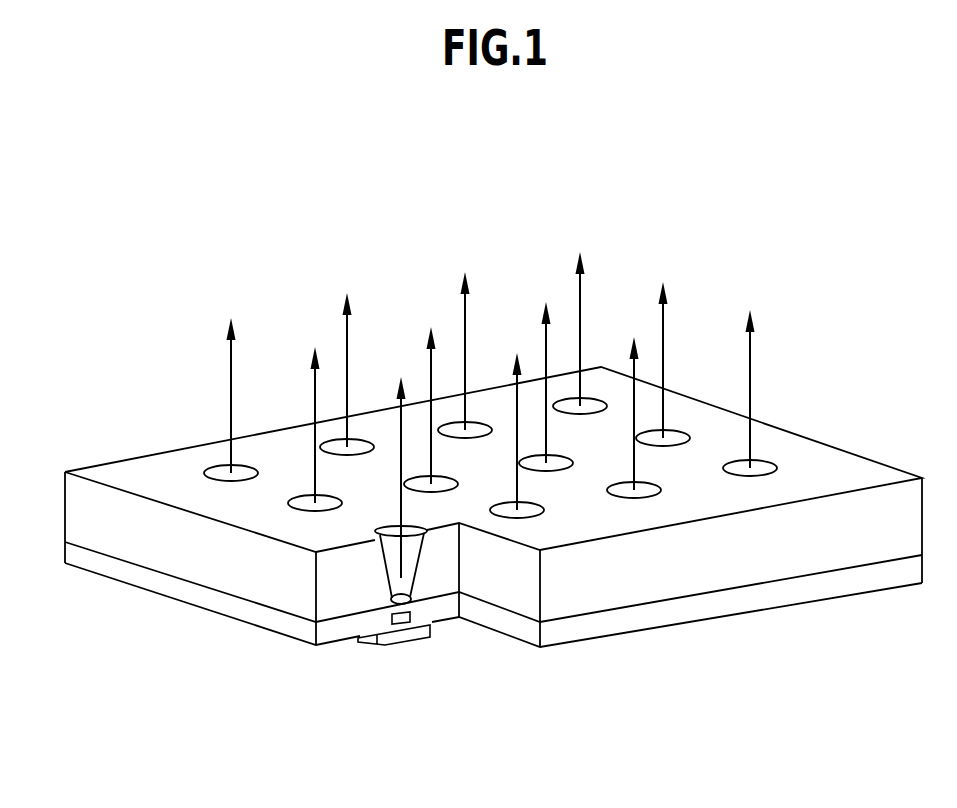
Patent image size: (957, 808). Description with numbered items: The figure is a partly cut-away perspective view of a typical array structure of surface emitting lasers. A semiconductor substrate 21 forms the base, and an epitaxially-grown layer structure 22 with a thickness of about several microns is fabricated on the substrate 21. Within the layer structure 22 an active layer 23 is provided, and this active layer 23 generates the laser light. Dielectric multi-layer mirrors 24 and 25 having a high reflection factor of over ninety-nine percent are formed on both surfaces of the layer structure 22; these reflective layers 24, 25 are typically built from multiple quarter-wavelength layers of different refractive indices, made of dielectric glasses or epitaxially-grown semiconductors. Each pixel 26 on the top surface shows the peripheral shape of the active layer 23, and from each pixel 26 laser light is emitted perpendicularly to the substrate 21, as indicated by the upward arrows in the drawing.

The semiconductor substrate 21 is at (852, 552).
The epitaxially-grown layer structure 22 is at (693, 613).
The active layer 23 is at (412, 614).
The dielectric multi-layer mirror 24 is at (385, 641).
The dielectric multi-layer mirror 25 is at (388, 604).
The pixel 26 is at (757, 464).